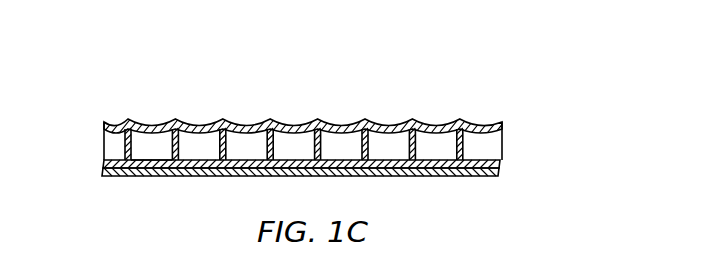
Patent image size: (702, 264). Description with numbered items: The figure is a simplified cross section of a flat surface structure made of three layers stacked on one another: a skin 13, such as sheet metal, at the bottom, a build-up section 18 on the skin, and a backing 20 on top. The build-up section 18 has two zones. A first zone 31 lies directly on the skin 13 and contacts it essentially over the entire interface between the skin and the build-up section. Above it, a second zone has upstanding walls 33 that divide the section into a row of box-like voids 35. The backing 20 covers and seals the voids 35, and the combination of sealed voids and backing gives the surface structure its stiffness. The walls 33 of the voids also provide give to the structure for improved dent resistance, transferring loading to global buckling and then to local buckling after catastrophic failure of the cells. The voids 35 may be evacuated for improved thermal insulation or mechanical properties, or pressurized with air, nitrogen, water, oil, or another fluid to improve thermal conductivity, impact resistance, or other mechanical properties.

The skin 13 is at (500, 173).
The build-up section 18 is at (311, 115).
The backing 20 is at (438, 123).
The first zone 31 is at (105, 163).
The walls 33 is at (122, 154).
The box-like voids 35 is at (150, 143).